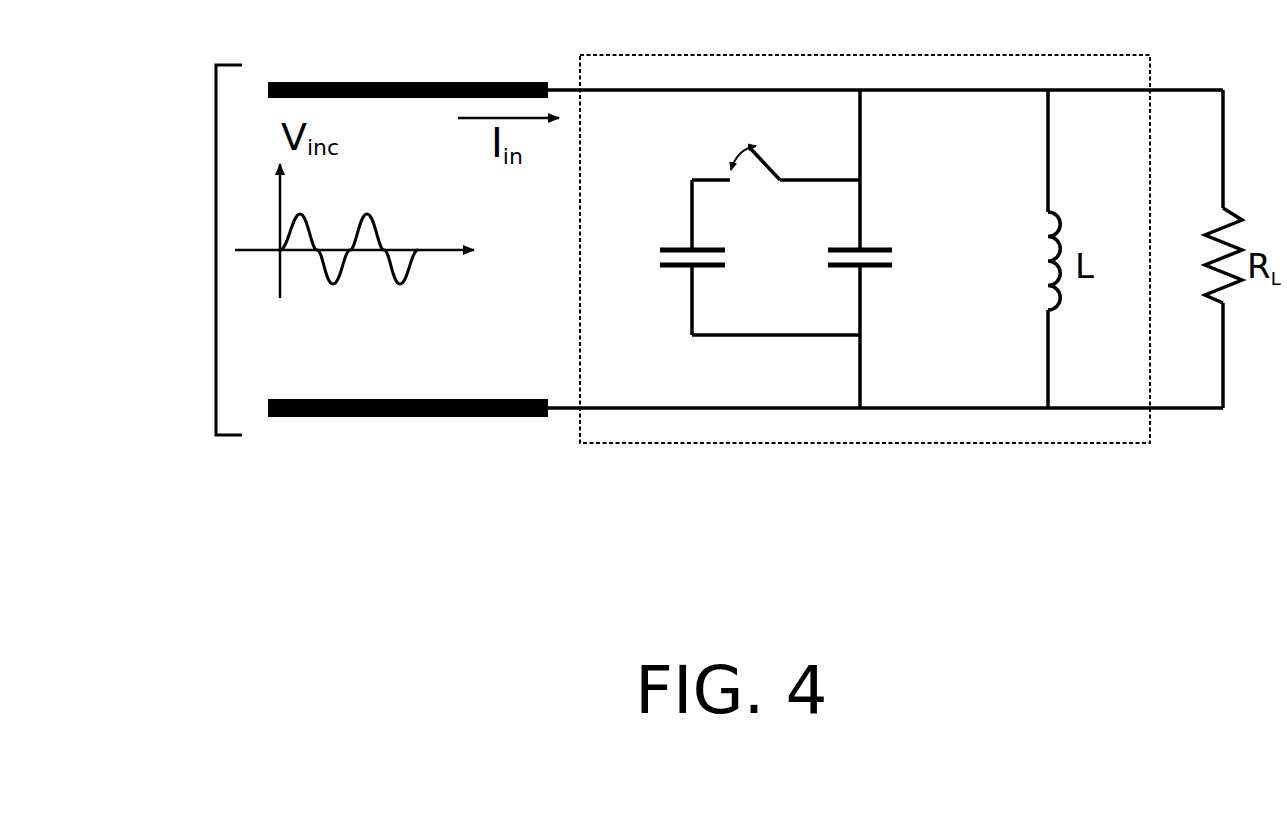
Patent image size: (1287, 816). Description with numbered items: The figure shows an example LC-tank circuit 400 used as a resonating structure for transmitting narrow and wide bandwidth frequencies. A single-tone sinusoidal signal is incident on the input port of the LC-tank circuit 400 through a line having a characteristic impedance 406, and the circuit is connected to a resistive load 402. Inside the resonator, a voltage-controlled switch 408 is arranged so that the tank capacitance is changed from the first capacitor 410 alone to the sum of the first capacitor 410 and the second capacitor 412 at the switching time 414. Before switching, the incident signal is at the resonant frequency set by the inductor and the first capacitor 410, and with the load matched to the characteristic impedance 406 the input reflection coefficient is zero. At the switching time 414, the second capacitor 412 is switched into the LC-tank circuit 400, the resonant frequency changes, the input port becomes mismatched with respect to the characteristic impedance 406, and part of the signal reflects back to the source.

The LC-tank circuit 400 is at (1104, 47).
The resistive load 402 is at (215, 252).
The characteristic impedance Z0 406 is at (504, 66).
The voltage-controlled switch 408 is at (769, 209).
The capacitor C1 410 is at (919, 314).
The capacitor C2 412 is at (644, 314).
The switching time t = ts 414 is at (829, 126).